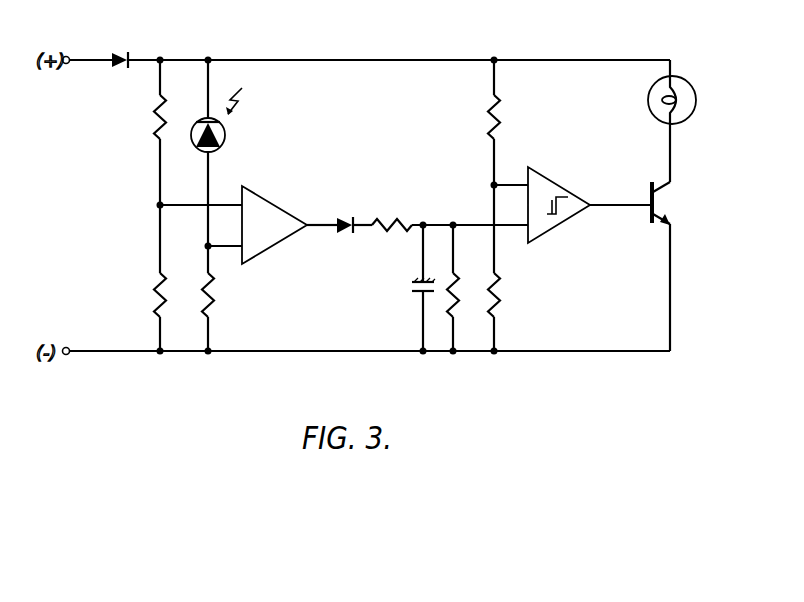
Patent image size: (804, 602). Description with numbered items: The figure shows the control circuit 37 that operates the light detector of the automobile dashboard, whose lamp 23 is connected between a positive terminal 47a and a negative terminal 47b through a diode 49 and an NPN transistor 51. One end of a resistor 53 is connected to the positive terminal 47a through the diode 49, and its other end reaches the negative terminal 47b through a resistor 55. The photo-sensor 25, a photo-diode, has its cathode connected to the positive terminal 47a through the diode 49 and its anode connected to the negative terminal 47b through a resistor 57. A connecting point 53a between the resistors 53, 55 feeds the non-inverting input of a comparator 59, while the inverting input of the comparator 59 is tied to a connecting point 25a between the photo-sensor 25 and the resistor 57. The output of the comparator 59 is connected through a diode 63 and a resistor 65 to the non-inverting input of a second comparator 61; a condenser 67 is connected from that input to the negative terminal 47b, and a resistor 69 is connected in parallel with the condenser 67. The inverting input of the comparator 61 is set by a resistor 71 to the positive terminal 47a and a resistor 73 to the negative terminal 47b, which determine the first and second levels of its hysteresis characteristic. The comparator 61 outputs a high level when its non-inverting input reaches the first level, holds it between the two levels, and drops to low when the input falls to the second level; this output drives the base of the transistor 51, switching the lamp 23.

The lamp 23 is at (648, 107).
The photo-sensor 25 is at (226, 135).
The connecting point 25a is at (205, 244).
The control circuit 37 is at (572, 48).
The positive terminal 47a is at (66, 55).
The negative terminal 47b is at (67, 356).
The diode 49 is at (120, 52).
The NPN transistor 51 is at (649, 189).
The resistor 53 is at (156, 114).
The connecting point 53a is at (157, 203).
The resistor 55 is at (155, 293).
The resistor 57 is at (213, 295).
The comparator 59 is at (279, 209).
The comparator 61 is at (566, 191).
The diode 63 is at (345, 216).
The resistor 65 is at (391, 217).
The condenser 67 is at (410, 292).
The resistor 69 is at (457, 276).
The resistor 71 is at (499, 121).
The resistor 73 is at (502, 294).